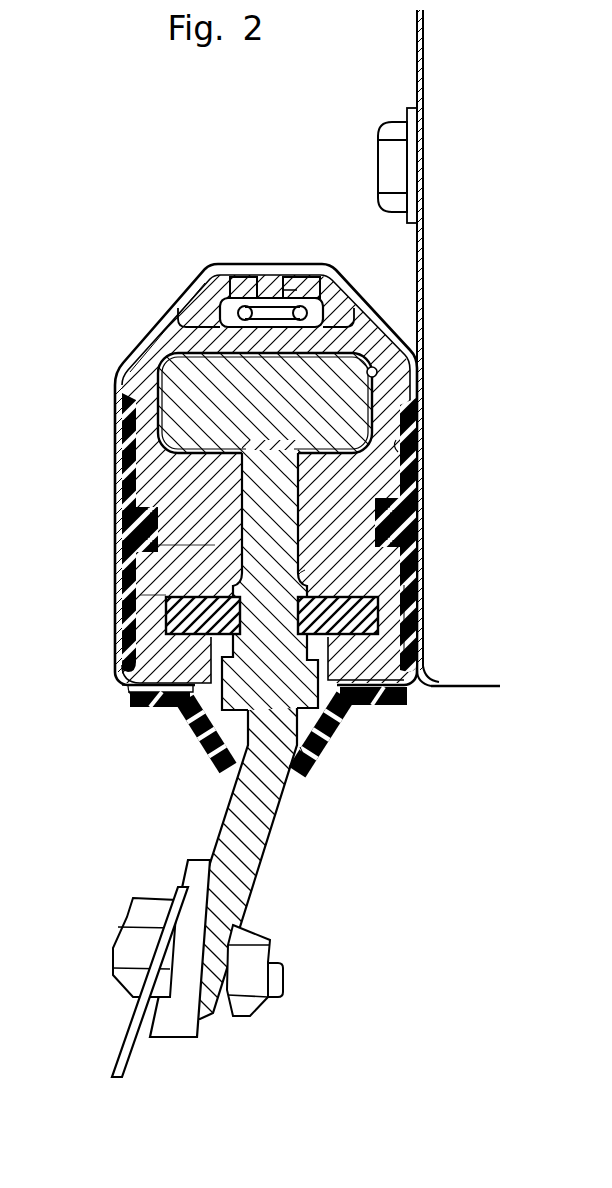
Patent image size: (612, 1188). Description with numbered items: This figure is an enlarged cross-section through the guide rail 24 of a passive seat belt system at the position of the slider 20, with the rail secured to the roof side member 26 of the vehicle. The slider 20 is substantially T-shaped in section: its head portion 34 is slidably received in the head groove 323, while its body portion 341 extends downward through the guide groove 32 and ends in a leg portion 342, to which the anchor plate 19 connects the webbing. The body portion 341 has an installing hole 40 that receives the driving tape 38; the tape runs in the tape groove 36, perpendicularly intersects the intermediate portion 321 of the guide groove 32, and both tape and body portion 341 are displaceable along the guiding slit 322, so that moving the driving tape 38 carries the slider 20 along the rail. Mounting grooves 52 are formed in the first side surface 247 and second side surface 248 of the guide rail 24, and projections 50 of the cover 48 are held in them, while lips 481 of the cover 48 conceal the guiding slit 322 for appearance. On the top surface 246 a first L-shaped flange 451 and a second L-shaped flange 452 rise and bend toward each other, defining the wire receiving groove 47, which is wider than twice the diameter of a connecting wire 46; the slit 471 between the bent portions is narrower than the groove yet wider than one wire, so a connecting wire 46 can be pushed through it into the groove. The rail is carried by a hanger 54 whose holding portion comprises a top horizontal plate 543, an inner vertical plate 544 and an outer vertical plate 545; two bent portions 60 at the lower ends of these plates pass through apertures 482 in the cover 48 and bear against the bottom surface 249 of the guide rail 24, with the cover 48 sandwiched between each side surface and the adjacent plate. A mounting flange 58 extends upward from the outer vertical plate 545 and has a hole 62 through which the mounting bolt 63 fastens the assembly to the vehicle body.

The anchor plate 19 is at (138, 1027).
The slider 20 is at (250, 847).
The guide rail 24 is at (150, 484).
The roof side member 26 is at (445, 689).
The guide groove 32 is at (215, 546).
The head portion 34 is at (175, 391).
The tape groove 36 is at (153, 688).
The driving tape 38 is at (170, 632).
The installing hole 40 is at (300, 637).
The connecting wire 46 is at (262, 312).
The wire receiving groove 47 is at (230, 330).
The cover 48 is at (413, 594).
The projections 50 is at (384, 536).
The mounting grooves 52 is at (402, 467).
The hanger 54 is at (133, 333).
The mounting flange 58 is at (425, 243).
The bent portions 60 is at (170, 697).
The hole 62 is at (418, 152).
The mounting bolt 63 is at (379, 166).
The top surface 246 is at (183, 320).
The first side surface 247 is at (130, 457).
The second side surface 248 is at (413, 425).
The bottom surface 249 is at (156, 695).
The intermediate portion 321 is at (167, 595).
The guiding slit 322 is at (354, 708).
The head groove 323 is at (380, 373).
The body portion 341 is at (280, 564).
The leg portion 342 is at (193, 1000).
The first L-shaped flange 451 is at (213, 297).
The second L-shaped flange 452 is at (330, 307).
The slit 471 is at (283, 265).
The lips 481 is at (323, 752).
The apertures 482 is at (131, 693).
The top horizontal plate 543 is at (247, 268).
The inner vertical plate 544 is at (128, 440).
The outer vertical plate 545 is at (400, 443).